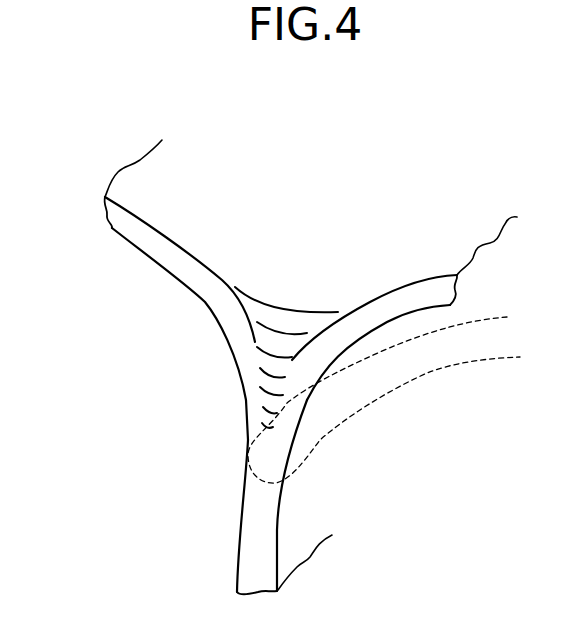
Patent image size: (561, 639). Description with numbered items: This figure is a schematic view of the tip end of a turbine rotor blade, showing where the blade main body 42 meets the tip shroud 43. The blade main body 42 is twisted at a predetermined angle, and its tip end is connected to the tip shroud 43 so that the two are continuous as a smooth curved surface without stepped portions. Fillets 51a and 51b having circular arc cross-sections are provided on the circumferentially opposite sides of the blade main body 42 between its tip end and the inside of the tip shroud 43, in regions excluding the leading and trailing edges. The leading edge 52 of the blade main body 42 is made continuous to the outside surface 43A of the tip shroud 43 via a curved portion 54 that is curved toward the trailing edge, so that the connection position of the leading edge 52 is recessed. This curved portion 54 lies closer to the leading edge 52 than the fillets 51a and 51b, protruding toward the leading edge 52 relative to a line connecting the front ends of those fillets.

The blade main body 42 is at (372, 488).
The tip shroud 43 is at (412, 205).
The outside surface of the tip shroud 43A is at (178, 211).
The fillet 51a is at (400, 327).
The fillet 51b is at (232, 348).
The leading edge 52 is at (250, 545).
The curved portion 54 is at (272, 387).